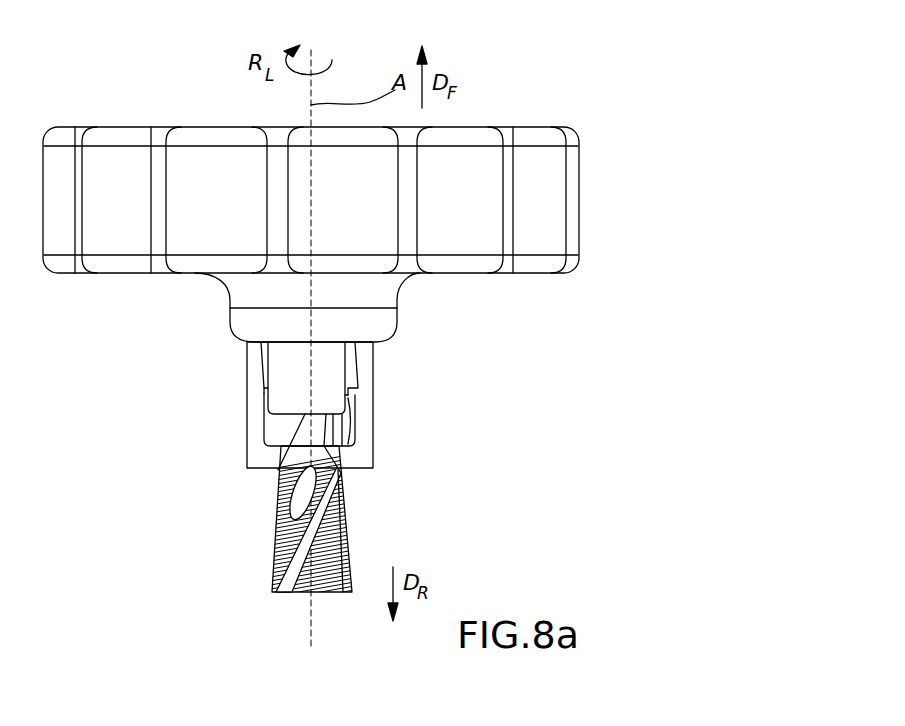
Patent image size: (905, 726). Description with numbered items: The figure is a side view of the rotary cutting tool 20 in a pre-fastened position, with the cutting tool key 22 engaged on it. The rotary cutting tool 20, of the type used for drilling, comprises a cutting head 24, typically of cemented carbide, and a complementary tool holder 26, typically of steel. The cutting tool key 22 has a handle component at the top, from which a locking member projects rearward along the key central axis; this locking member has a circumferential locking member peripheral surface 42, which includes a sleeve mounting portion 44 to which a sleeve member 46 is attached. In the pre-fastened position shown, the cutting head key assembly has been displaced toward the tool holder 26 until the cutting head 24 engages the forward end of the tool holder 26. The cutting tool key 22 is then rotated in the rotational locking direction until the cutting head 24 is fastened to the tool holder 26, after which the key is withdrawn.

The rotary cutting tool 20 is at (308, 473).
The cutting tool key 22 is at (596, 180).
The cutting head 24 is at (250, 432).
The tool holder 26 is at (232, 544).
The locking member peripheral surface 42 is at (226, 332).
The sleeve mounting portion 44 is at (262, 358).
The sleeve member 46 is at (396, 396).